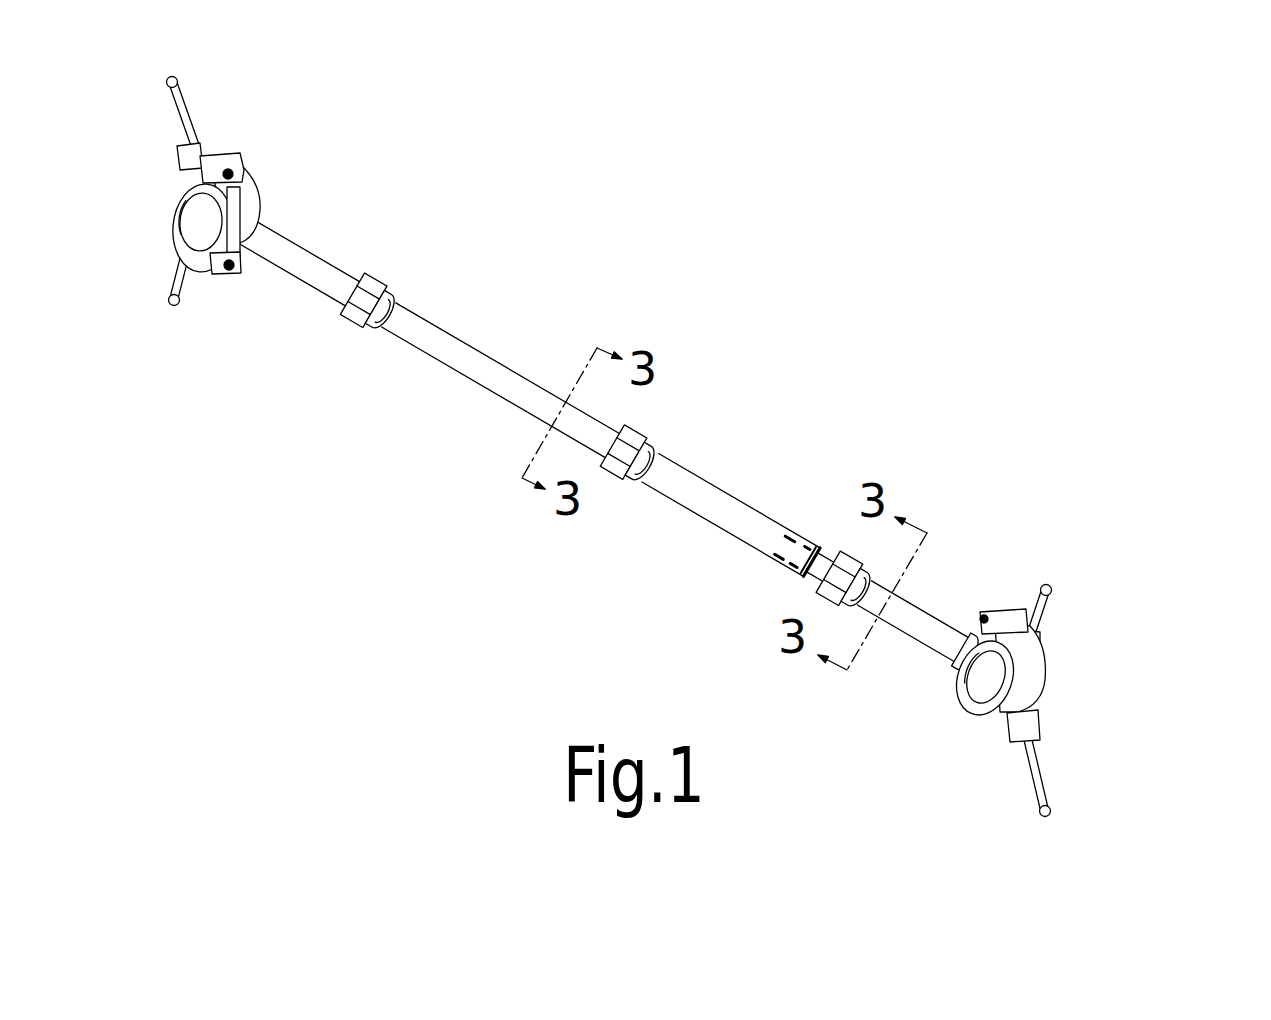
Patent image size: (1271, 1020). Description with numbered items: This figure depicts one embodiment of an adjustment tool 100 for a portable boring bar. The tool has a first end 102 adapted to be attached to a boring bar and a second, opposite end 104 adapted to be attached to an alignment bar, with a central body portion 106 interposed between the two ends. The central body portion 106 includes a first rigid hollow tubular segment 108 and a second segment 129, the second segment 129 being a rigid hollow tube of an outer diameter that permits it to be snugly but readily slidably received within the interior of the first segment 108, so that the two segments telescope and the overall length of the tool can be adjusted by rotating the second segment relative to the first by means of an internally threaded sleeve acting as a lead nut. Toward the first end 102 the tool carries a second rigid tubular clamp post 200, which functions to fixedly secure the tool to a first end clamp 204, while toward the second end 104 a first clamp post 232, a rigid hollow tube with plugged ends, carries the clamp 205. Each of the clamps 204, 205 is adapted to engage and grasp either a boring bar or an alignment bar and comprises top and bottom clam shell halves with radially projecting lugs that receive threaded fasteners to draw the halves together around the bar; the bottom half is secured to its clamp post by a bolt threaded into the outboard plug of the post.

The adjustment tool 100 is at (533, 328).
The first end 102 is at (290, 195).
The second end 104 is at (1065, 632).
The central body portion 106 is at (620, 403).
The first rigid hollow tubular segment 108 is at (730, 490).
The second segment 129 is at (805, 582).
The second rigid tubular clamp post 200 is at (348, 252).
The first end clamp 204 is at (250, 189).
The clamp 205 is at (1040, 684).
The first clamp post 232 is at (950, 593).